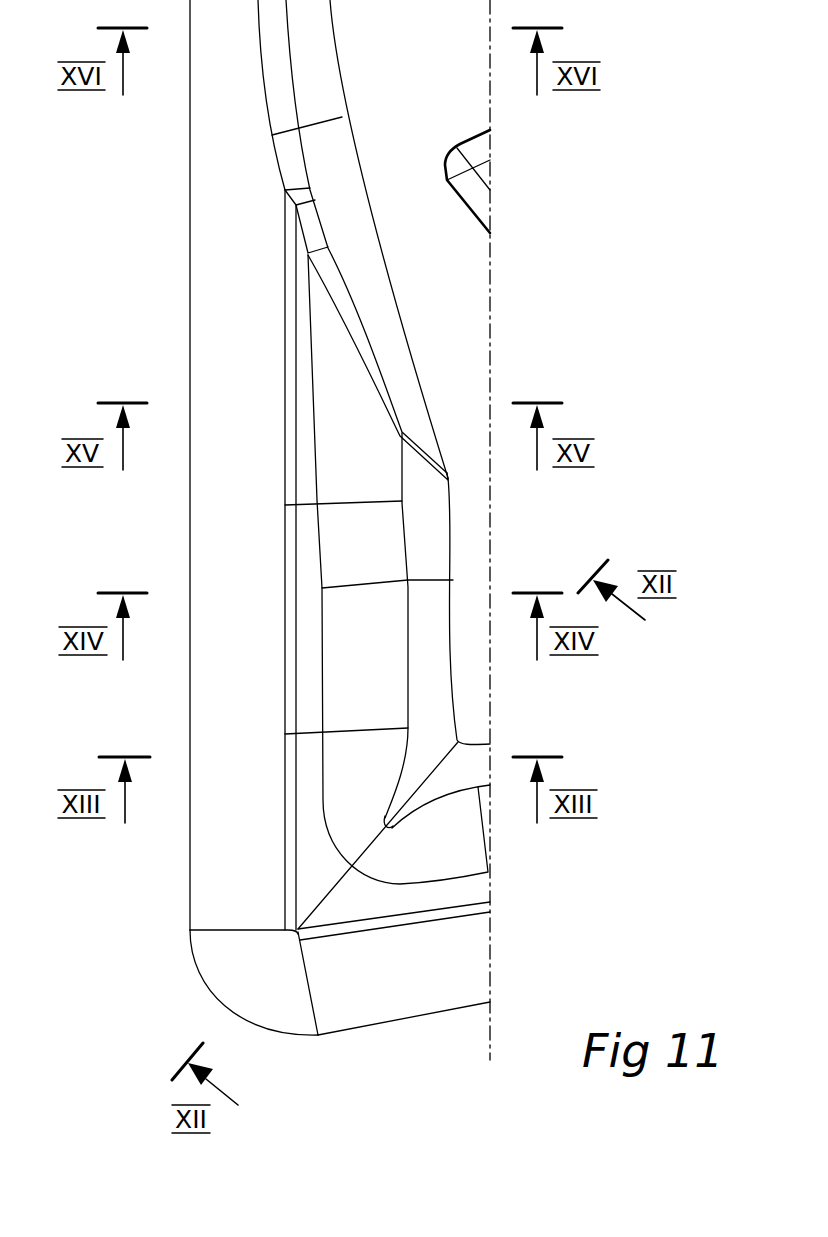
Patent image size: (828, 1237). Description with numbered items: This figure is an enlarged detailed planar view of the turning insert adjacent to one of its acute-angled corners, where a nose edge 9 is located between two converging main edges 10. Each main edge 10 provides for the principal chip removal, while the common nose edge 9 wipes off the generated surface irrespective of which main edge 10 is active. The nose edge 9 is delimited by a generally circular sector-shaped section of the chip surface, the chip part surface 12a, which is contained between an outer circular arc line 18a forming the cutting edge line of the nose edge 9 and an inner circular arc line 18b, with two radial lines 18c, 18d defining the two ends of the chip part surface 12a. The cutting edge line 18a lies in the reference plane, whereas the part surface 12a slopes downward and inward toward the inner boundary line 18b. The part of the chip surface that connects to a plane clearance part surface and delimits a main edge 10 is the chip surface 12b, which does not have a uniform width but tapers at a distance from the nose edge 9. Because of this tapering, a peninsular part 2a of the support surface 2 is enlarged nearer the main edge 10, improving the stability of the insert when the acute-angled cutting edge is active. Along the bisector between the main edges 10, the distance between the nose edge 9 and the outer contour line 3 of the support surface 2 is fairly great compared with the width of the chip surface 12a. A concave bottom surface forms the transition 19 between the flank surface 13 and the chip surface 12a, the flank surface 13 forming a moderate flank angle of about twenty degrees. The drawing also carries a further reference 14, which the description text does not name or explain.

The support surface 2 is at (455, 690).
The peninsular support part surface 2a is at (364, 73).
The outer contour line 3 is at (365, 178).
The nose edge 9 is at (230, 1017).
The main edge 10 is at (370, 1028).
The chip part surface 12a is at (230, 992).
The chip surface of the main edge 12b is at (216, 778).
The flank surface 13 is at (411, 520).
The flange 14 is at (190, 930).
The outer circular arc line 18a is at (200, 980).
The inner circular arc line 18b is at (295, 938).
The radial line 18c is at (230, 930).
The radial line 18d is at (308, 985).
The transition 19 is at (347, 557).